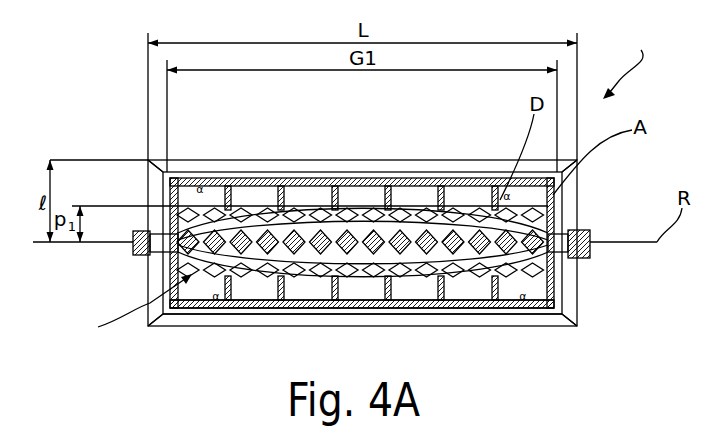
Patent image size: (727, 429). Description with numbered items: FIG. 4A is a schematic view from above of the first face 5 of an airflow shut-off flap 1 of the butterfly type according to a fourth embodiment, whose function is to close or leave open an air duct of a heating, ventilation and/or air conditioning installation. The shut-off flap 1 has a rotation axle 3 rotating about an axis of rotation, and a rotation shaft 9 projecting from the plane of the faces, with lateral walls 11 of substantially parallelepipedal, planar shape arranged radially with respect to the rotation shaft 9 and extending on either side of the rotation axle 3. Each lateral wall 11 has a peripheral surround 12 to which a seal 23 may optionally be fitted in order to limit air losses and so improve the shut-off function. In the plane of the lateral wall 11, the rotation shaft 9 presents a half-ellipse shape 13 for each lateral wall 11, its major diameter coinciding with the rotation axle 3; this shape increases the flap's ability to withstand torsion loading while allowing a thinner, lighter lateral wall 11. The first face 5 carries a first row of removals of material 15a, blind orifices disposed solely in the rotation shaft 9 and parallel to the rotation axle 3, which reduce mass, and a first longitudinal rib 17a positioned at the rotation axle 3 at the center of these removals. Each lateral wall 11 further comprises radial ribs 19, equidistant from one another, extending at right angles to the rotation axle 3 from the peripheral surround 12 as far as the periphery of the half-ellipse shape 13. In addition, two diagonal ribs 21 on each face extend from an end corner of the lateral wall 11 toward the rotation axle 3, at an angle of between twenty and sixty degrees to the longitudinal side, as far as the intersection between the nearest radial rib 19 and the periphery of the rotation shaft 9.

The airflow shut-off flap 1 is at (625, 62).
The rotation axle 3 is at (592, 258).
The first face 5 is at (570, 203).
The rotation shaft 9 is at (136, 312).
The lateral wall 11 is at (457, 300).
The peripheral surround 12 is at (326, 212).
The half-ellipse shape 13 is at (255, 300).
The first row of removals of material 15a is at (362, 212).
The first longitudinal rib 17a is at (303, 210).
The radial rib 19 is at (229, 188).
The diagonal rib 21 is at (200, 185).
The seal 23 is at (397, 320).